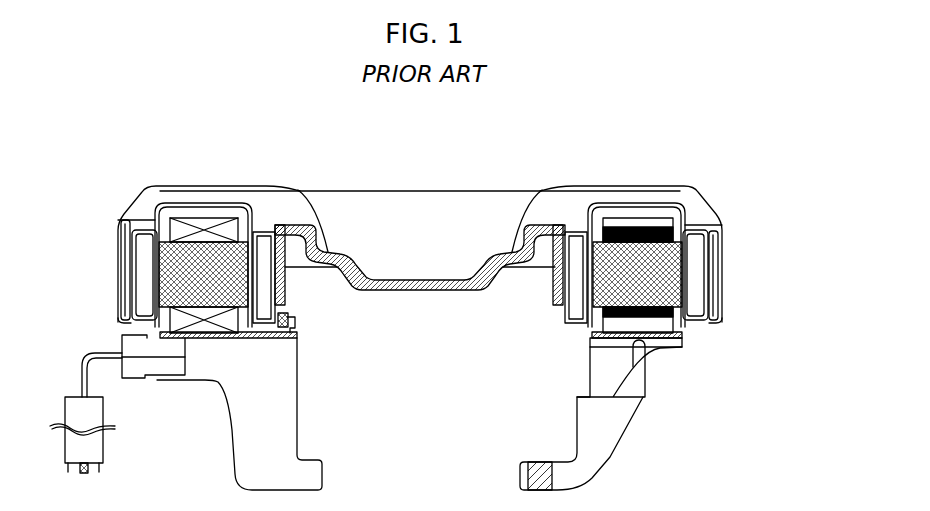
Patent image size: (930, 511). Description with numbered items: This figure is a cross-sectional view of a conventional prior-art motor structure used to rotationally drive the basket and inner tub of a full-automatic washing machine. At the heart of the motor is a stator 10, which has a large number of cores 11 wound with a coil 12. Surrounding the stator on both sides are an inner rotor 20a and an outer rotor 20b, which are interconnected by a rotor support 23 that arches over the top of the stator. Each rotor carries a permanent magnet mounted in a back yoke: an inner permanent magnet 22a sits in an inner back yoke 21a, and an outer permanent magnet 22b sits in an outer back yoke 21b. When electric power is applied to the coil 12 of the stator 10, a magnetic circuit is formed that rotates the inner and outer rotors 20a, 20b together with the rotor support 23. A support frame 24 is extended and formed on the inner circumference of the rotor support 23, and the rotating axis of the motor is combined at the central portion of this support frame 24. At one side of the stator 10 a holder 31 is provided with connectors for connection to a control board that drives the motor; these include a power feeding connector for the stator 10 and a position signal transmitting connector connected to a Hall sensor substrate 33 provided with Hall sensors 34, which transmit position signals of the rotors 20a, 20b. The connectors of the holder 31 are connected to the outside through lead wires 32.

The stator 10 is at (476, 274).
The cores 11 is at (668, 248).
The coil 12 is at (672, 219).
The inner rotor 20a is at (461, 270).
The inner back yoke 21a is at (713, 263).
The inner permanent magnet 22a is at (700, 278).
The outer rotor 20b is at (420, 279).
The outer back yoke 21b is at (553, 293).
The outer permanent magnet 22b is at (557, 308).
The rotor support 23 is at (557, 186).
The support frame 24 is at (388, 291).
The holder 31 is at (132, 381).
The lead wires 32 is at (105, 454).
The Hall sensor substrate 33 is at (297, 335).
The Hall sensors 34 is at (296, 316).